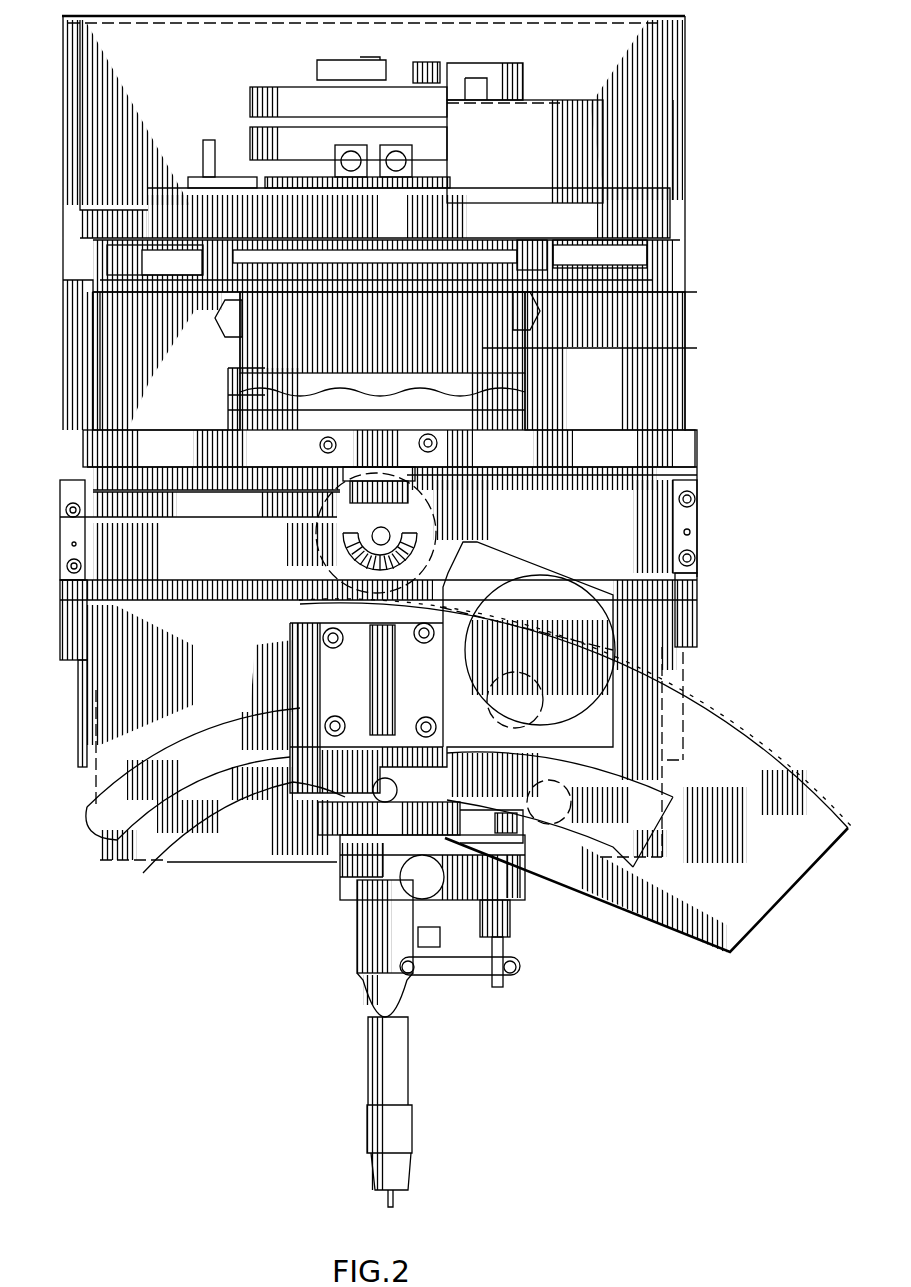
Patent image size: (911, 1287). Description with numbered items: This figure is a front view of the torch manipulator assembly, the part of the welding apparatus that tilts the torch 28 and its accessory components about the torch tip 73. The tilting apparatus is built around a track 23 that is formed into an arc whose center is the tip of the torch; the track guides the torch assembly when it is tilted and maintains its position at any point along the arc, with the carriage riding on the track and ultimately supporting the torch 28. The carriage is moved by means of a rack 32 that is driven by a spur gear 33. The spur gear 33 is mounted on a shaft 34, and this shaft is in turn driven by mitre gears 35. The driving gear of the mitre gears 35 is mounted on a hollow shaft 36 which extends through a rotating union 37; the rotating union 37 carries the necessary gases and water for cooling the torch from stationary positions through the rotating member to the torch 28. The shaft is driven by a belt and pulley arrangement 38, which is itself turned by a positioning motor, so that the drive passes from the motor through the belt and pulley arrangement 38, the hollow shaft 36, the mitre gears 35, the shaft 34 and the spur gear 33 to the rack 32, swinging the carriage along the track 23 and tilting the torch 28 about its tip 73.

The belt and pulley arrangement 38 is at (190, 89).
The rotating union 37 is at (620, 347).
The spur gear 33 is at (437, 518).
The shaft 34 is at (380, 540).
The mitre gears 35 is at (380, 512).
The hollow shaft 36 is at (375, 533).
The rack 32 is at (710, 698).
The track 23 is at (137, 853).
The torch 28 is at (370, 1055).
The torch tip 73 is at (390, 1207).